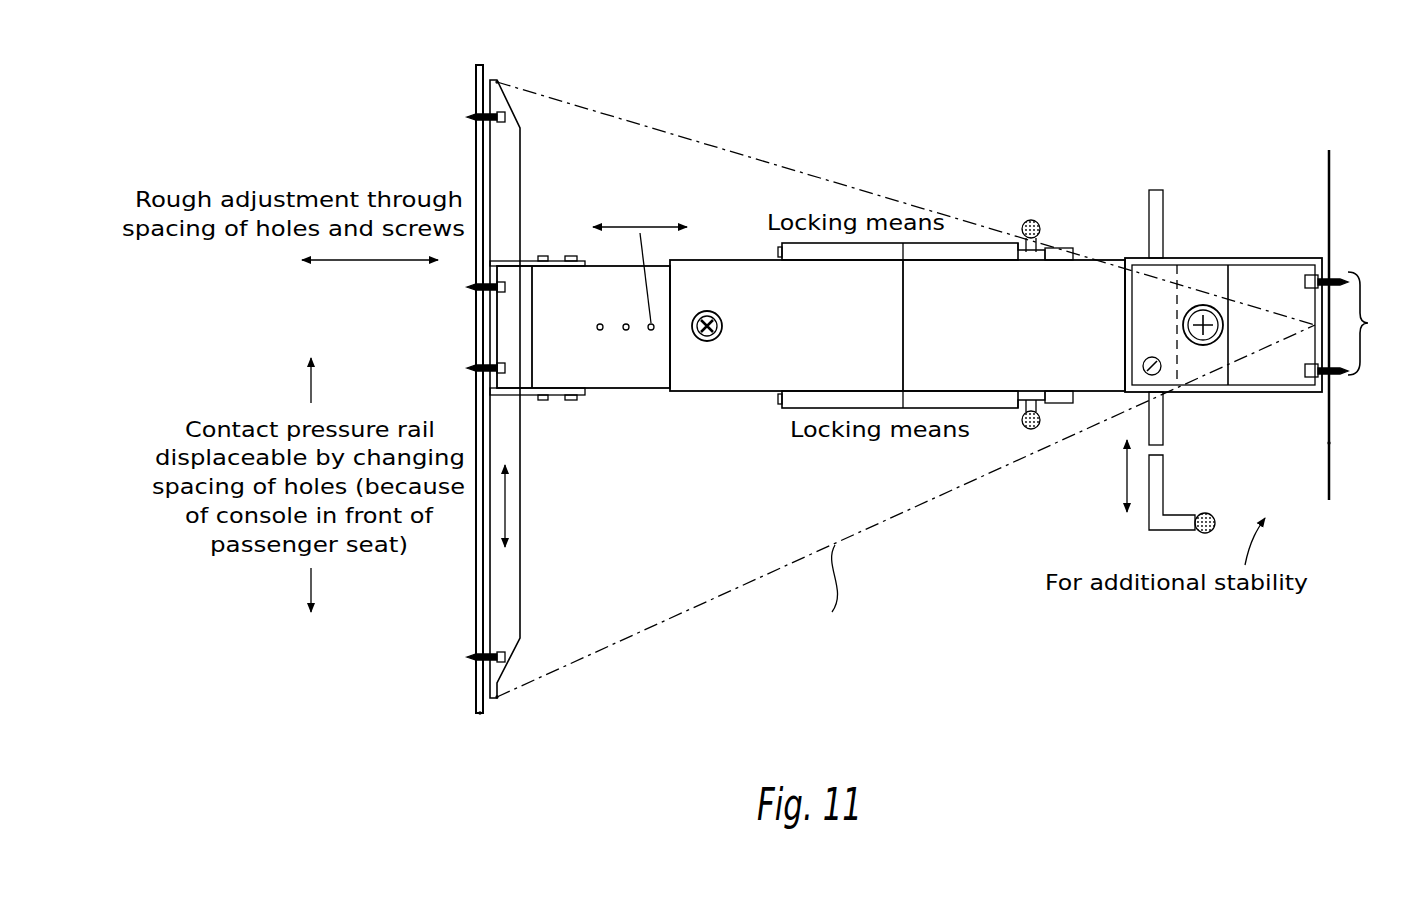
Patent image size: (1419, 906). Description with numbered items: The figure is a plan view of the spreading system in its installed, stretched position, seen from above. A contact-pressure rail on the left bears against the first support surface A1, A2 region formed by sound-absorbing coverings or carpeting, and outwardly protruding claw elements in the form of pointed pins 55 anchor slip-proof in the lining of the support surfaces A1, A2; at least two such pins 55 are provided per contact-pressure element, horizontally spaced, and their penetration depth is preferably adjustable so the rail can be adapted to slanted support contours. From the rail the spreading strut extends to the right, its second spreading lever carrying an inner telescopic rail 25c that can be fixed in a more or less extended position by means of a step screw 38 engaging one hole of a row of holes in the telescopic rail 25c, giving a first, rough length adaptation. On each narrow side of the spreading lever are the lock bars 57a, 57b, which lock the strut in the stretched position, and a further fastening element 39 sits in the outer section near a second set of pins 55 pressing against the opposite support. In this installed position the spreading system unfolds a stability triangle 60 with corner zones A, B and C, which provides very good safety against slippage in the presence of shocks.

The pointed pins 55 is at (472, 113).
The stability triangle lines 60 is at (700, 140).
The lock bar 57a is at (985, 410).
The lock bar 57b is at (976, 250).
The step screw 38 is at (722, 320).
The fastening element 39 is at (1125, 340).
The telescopic rail 25c is at (627, 372).
The corner zone A is at (482, 716).
The support surface A1 is at (1328, 443).
The support surface A2 is at (515, 680).
The corner zone B is at (497, 81).
The corner zone C is at (1370, 323).